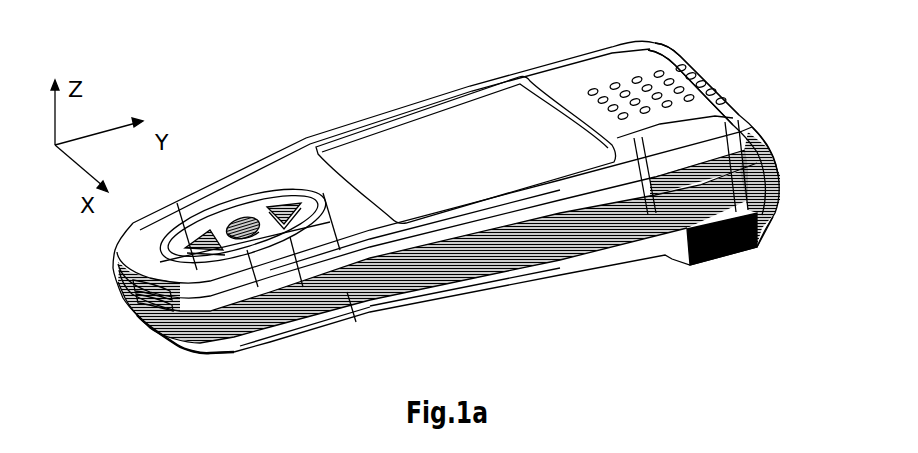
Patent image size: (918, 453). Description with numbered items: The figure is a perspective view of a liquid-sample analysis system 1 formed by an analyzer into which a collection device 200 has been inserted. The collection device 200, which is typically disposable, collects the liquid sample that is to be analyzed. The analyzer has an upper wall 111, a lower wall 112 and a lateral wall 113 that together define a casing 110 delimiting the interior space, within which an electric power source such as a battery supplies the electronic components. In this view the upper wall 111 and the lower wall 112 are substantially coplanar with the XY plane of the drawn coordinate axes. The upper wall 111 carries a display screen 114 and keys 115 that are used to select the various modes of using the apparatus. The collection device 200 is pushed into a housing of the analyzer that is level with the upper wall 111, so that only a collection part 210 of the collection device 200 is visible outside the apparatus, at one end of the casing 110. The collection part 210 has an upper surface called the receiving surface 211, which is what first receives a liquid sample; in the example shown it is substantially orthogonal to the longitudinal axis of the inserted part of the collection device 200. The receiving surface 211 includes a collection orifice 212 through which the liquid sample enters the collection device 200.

The liquid-sample analysis system 1 is at (225, 79).
The casing 110 is at (518, 288).
The upper wall 111 is at (340, 223).
The lower wall 112 is at (297, 339).
The lateral wall 113 is at (372, 322).
The display screen 114 is at (397, 145).
The keys 115 is at (284, 207).
The collection device 200 is at (726, 116).
The collection part 210 is at (744, 128).
The receiving surface 211 is at (697, 136).
The collection orifice 212 is at (770, 216).